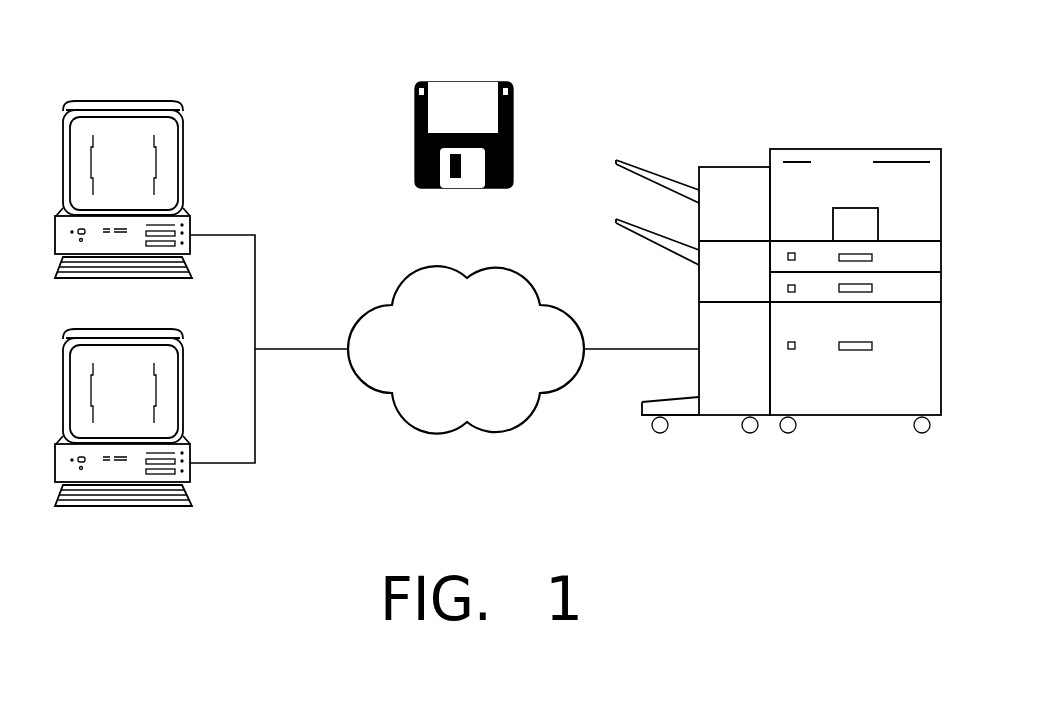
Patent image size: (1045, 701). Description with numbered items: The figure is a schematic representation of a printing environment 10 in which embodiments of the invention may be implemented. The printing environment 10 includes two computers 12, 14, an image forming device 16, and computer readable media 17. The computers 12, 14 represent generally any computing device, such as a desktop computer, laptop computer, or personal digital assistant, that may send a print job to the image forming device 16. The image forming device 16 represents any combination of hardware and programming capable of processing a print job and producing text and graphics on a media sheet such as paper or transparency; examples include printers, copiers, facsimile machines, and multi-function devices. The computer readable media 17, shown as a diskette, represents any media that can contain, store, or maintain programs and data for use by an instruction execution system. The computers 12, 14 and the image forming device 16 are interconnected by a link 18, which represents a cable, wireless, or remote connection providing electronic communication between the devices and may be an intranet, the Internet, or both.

The printing environment 10 is at (106, 43).
The computer 12 is at (183, 168).
The computer 14 is at (183, 396).
The image forming device 16 is at (847, 155).
The computer readable media 17 is at (415, 130).
The link 18 is at (410, 285).